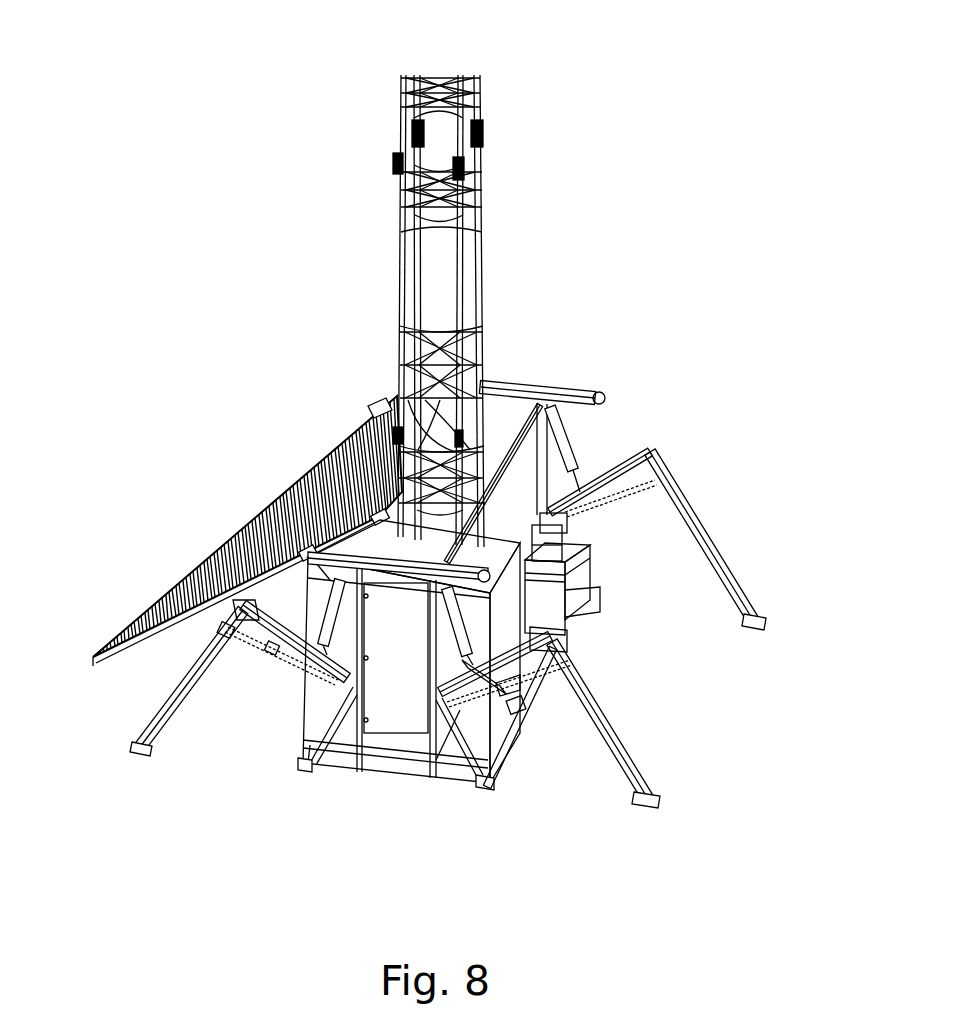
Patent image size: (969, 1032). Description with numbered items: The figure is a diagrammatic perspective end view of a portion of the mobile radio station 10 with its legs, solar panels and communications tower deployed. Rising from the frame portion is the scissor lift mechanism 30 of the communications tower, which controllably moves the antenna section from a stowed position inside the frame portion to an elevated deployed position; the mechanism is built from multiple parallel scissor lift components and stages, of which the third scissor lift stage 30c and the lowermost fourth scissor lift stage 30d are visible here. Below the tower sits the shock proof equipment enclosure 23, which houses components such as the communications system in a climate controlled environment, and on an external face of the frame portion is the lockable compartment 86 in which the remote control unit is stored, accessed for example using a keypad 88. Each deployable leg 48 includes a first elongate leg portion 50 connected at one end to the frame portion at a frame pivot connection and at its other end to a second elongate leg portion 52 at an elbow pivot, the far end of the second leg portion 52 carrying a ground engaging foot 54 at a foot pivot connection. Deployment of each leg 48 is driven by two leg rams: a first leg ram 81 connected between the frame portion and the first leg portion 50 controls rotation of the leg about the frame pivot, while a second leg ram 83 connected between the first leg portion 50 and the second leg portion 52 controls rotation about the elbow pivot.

The mobile radio station 10 is at (700, 185).
The scissor lift mechanism 30 is at (545, 246).
The third scissor lift stage 30c is at (481, 100).
The fourth scissor lift stage 30d is at (481, 353).
The lockable compartment 86 is at (373, 412).
The keypad 88 is at (196, 497).
The equipment enclosure 23 is at (402, 718).
The deployable leg 48 is at (748, 547).
The first elongate leg portion 50 is at (257, 623).
The second elongate leg portion 52 is at (700, 505).
The ground engaging foot 54 is at (765, 622).
The first leg ram 81 is at (567, 432).
The second leg ram 83 is at (617, 500).